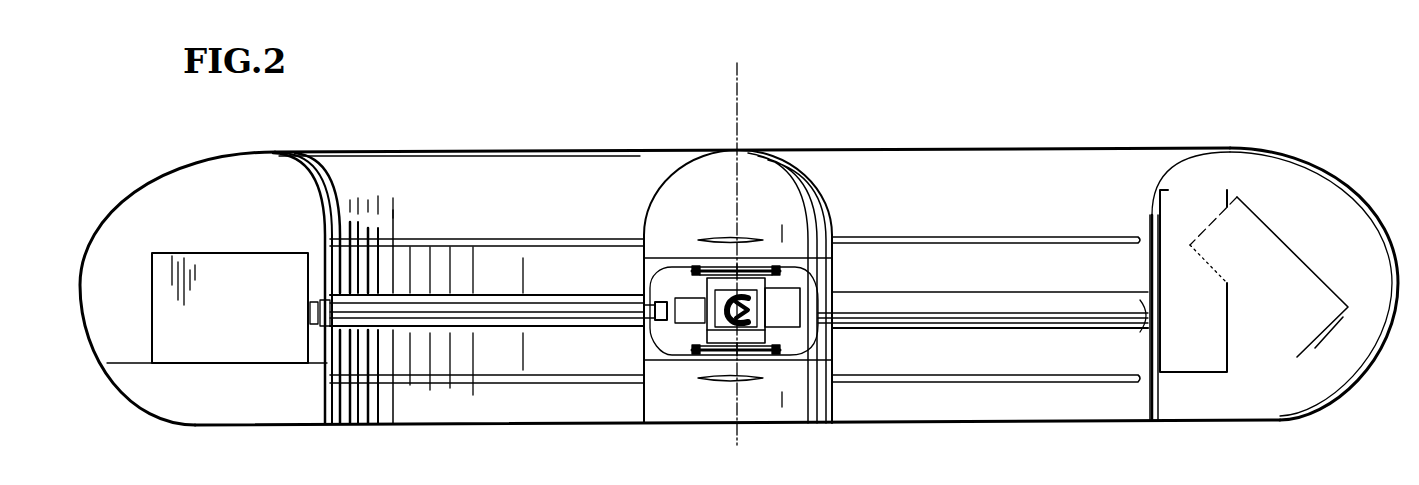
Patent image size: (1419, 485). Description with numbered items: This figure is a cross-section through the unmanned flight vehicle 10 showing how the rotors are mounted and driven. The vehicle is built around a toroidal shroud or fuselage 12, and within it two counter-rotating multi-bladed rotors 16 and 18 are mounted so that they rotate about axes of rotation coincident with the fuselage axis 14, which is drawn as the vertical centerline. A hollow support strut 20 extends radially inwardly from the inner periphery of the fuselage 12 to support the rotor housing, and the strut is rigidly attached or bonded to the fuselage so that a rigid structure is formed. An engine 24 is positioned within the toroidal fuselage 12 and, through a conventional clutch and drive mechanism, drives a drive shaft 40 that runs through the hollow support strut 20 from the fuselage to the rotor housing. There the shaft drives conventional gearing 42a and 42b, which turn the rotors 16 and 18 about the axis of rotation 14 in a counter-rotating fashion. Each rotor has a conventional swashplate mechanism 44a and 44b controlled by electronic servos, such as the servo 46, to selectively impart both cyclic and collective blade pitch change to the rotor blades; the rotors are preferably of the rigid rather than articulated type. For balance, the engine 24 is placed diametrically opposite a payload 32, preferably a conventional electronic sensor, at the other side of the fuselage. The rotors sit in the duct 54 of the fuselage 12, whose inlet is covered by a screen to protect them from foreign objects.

The unmanned flight vehicle 10 is at (1276, 100).
The toroidal shroud or fuselage 12 is at (1362, 193).
The fuselage axis 14 is at (740, 93).
The multi-bladed rotor 16 is at (937, 238).
The multi-bladed rotor 18 is at (938, 374).
The support strut 20 is at (990, 293).
The engine 24 is at (240, 305).
The payload 32 is at (1292, 307).
The drive shaft 40 is at (470, 297).
The gearing 42a is at (715, 295).
The gearing 42b is at (757, 328).
The swashplate mechanism 44a is at (707, 270).
The swashplate mechanism 44b is at (708, 351).
The electronic servo 46 is at (793, 325).
The duct 54 is at (328, 226).